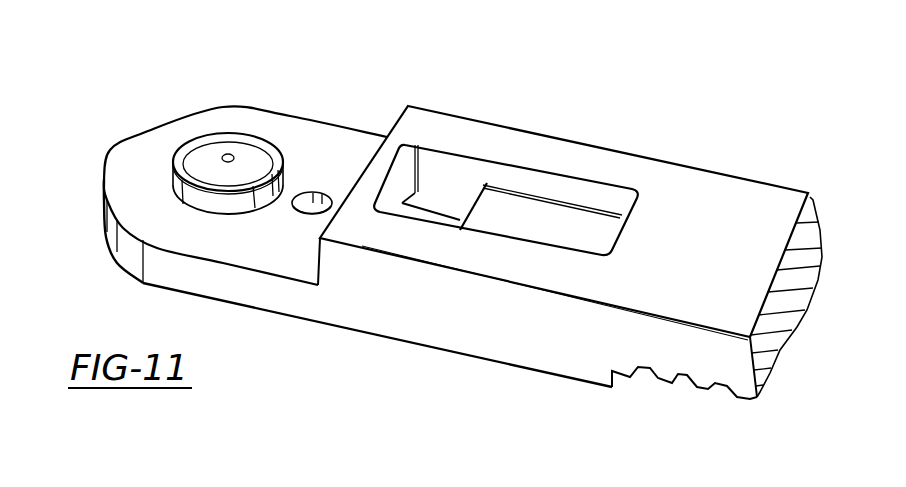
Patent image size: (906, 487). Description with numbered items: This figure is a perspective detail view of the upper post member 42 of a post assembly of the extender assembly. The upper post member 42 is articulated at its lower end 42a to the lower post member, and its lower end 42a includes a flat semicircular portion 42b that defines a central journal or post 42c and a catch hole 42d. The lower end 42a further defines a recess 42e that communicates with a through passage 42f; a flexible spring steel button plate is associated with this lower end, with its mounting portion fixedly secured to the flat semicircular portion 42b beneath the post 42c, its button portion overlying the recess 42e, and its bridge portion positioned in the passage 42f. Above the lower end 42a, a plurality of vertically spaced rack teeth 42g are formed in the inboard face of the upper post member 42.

The upper post member 42 is at (712, 152).
The lower end 42a is at (150, 145).
The flat semicircular portion 42b is at (110, 230).
The central journal or post 42c is at (224, 143).
The catch hole 42d is at (317, 193).
The recess 42e is at (558, 187).
The through passage 42f is at (452, 200).
The rack teeth 42g is at (677, 378).